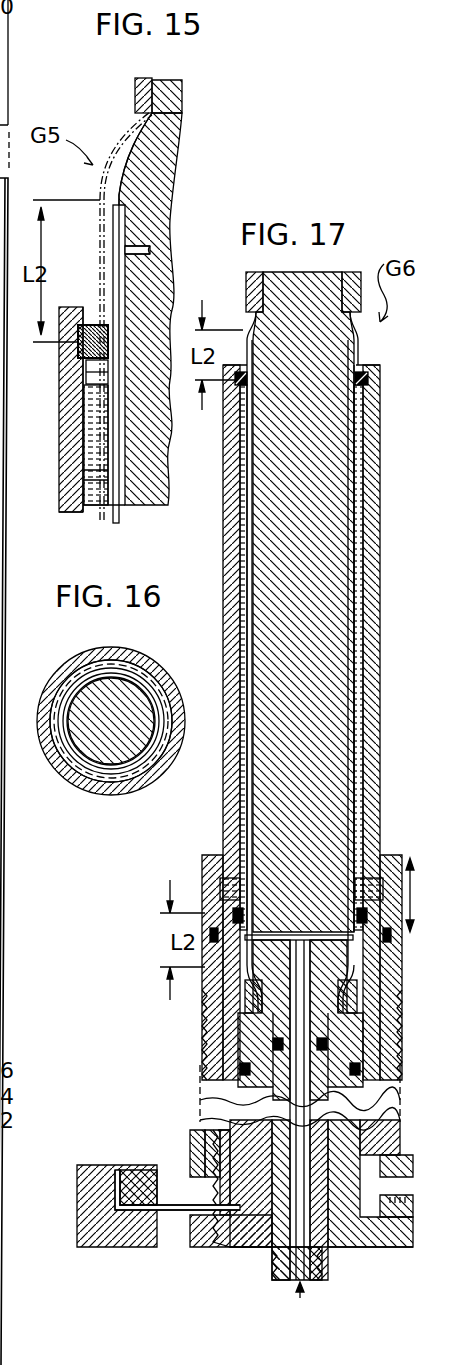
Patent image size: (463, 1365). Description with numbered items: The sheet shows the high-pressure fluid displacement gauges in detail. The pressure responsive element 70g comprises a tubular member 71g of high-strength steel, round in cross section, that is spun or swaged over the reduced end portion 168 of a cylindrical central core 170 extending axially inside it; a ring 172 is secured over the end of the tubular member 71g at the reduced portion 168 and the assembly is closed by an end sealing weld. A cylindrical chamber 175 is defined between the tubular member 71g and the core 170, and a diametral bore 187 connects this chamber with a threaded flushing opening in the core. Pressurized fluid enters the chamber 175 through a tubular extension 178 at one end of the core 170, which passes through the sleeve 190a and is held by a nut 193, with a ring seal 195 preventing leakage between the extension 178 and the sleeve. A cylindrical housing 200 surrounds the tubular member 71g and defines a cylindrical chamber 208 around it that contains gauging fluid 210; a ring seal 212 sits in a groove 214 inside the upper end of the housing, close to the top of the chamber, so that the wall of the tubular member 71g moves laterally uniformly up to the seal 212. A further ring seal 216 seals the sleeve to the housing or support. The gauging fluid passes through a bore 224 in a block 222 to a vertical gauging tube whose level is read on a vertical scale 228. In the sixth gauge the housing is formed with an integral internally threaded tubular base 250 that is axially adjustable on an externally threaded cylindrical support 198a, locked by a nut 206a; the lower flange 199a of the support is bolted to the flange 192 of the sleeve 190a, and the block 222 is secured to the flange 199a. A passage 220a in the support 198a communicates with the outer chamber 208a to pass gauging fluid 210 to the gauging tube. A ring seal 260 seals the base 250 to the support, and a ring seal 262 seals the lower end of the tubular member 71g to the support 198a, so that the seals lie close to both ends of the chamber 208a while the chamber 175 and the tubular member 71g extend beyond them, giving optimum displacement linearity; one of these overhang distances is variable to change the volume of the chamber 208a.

In FIG. 15, the reduced end portion 168 is at (178, 93).
In FIG. 15, the cylindrical central core 170 is at (182, 284).
In FIG. 16, the cylindrical central core 170 is at (88, 692).
In FIG. 15, the ring 172 is at (135, 96).
In FIG. 15, the cylindrical chamber 175 is at (120, 444).
In FIG. 16, the cylindrical chamber 175 is at (130, 680).
In FIG. 15, the diametral bore 187 is at (147, 250).
In FIG. 15, the tubular member 71g is at (116, 520).
In FIG. 16, the tubular member 71g is at (80, 768).
In FIG. 17, the tubular member 71g is at (366, 426).
In FIG. 17, the pressure responsive element 70g is at (370, 466).
In FIG. 15, the cylindrical housing 200 is at (70, 450).
In FIG. 15, the cylindrical chamber 208 is at (84, 474).
In FIG. 17, the chamber 208a is at (233, 453).
In FIG. 15, the gauging fluid 210 is at (90, 428).
In FIG. 16, the gauging fluid 210 is at (112, 778).
In FIG. 17, the gauging fluid 210 is at (237, 798).
In FIG. 15, the ring seal 212 is at (84, 384).
In FIG. 15, the groove 214 is at (74, 348).
In FIG. 17, the ring seal 216 is at (358, 1080).
In FIG. 17, the passage 220a is at (247, 938).
In FIG. 17, the block 222 is at (82, 1216).
In FIG. 17, the bore 224 is at (115, 1184).
In FIG. 15, the vertical scale 228 is at (12, 553).
In FIG. 17, the tubular base 250 is at (208, 990).
In FIG. 17, the ring seal 260 is at (238, 935).
In FIG. 17, the ring seal 262 is at (228, 893).
In FIG. 17, the sleeve 190a is at (263, 1128).
In FIG. 17, the annular radial flange 192 is at (202, 1238).
In FIG. 17, the nut 193 is at (264, 1248).
In FIG. 17, the ring seal 195 is at (332, 1045).
In FIG. 17, the cylindrical support 198a is at (215, 1033).
In FIG. 17, the lower flange 199a is at (200, 1198).
In FIG. 17, the nut 206a is at (197, 1155).
In FIG. 17, the tubular extension 178 is at (322, 1270).